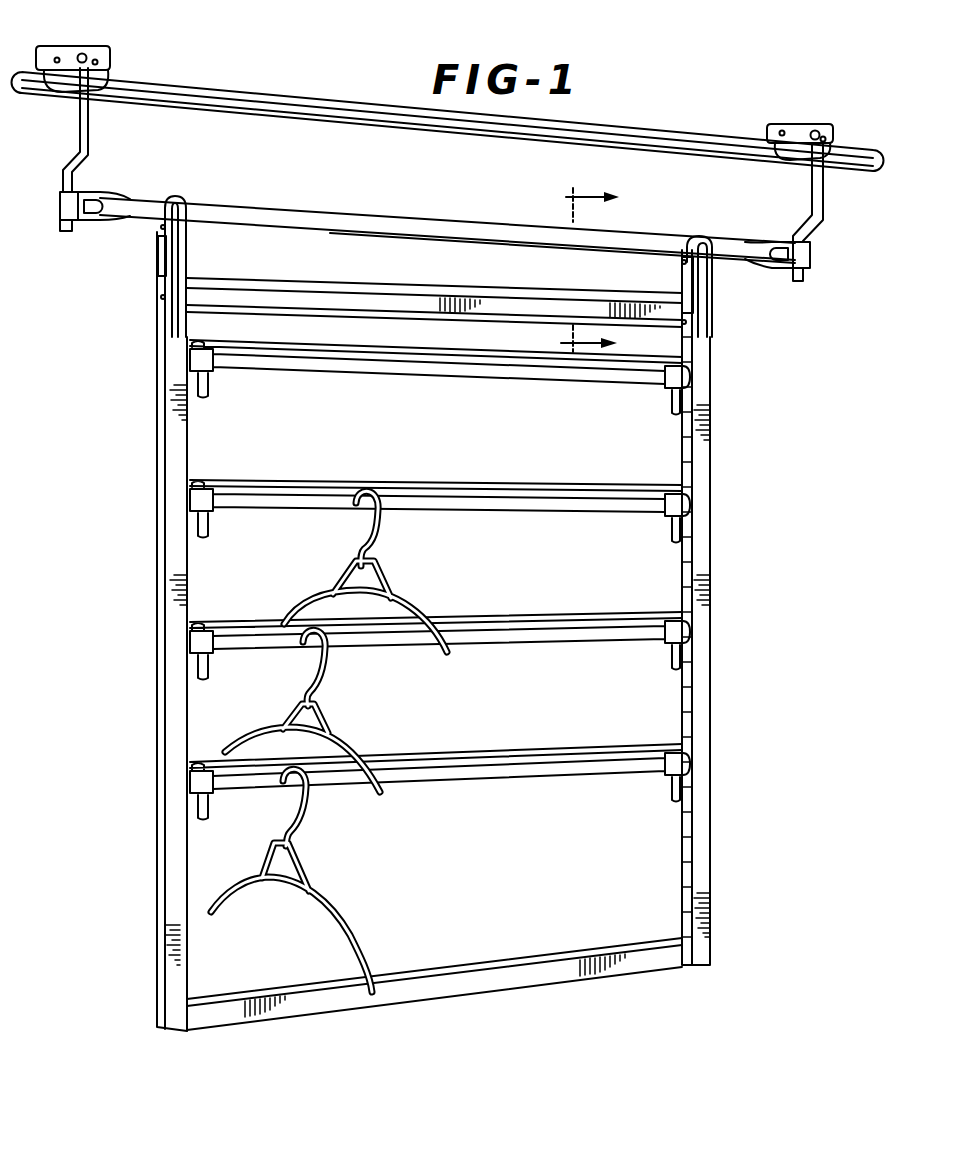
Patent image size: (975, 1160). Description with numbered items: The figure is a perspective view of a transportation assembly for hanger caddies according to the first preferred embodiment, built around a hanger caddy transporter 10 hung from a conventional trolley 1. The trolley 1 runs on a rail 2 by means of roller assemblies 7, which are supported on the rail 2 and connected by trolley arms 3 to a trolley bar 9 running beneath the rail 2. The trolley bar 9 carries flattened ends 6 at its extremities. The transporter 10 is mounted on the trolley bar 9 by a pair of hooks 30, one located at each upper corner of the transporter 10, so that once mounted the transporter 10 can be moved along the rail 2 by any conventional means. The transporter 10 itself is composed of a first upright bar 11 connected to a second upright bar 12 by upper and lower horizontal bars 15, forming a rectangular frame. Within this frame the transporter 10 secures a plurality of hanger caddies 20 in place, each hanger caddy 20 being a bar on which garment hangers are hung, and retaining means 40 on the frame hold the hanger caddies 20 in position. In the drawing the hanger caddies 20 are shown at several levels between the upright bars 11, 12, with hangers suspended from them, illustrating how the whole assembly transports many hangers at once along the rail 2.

The trolley 1 is at (362, 211).
The rail 2 is at (213, 96).
The trolley arm 3 is at (818, 213).
The flattened end 6 is at (87, 210).
The roller assembly 7 is at (62, 46).
The trolley bar 9 is at (487, 237).
The hanger caddy transporter 10 is at (453, 631).
The first upright bar 11 is at (176, 423).
The second upright bar 12 is at (703, 557).
The horizontal bar 15 is at (538, 309).
The hanger caddy 20 is at (196, 503).
The hook 30 is at (173, 200).
The retaining means 40 is at (165, 258).